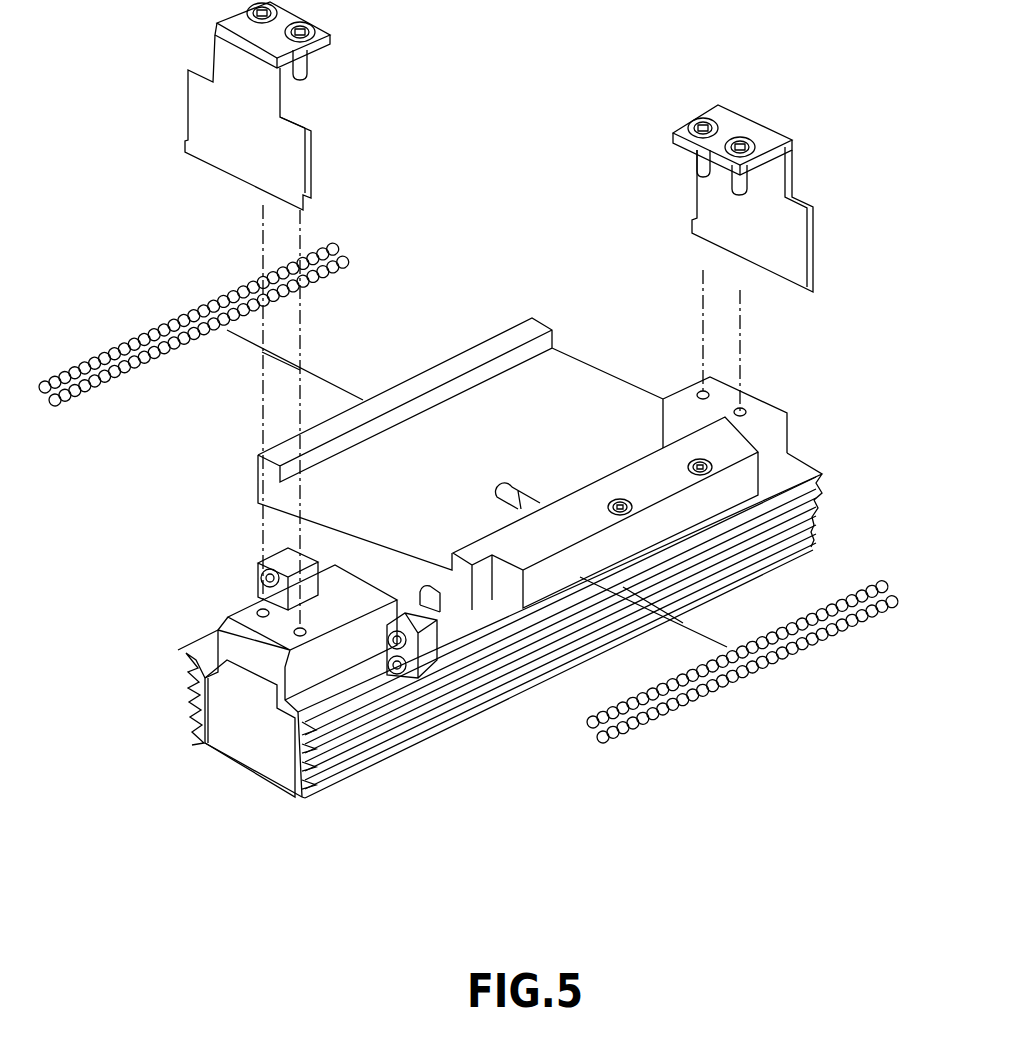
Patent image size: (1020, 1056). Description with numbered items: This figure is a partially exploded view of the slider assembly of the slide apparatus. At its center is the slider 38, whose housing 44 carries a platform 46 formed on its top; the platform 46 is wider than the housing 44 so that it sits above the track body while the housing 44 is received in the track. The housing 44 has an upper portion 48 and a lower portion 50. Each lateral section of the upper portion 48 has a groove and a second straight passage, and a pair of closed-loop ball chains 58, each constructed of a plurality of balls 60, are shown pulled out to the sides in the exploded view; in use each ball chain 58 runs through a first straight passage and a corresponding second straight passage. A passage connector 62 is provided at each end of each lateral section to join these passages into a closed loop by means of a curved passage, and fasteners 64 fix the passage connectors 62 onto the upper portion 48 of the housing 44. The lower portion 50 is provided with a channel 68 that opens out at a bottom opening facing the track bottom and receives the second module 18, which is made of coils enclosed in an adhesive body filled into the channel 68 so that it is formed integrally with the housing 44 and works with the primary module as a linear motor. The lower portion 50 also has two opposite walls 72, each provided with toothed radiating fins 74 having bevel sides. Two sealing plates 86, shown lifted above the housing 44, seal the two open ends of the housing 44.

The second module 18 is at (452, 722).
The slider 38 is at (452, 667).
The housing 44 is at (203, 655).
The platform 46 is at (553, 397).
The upper portion 48 is at (242, 565).
The lower portion 50 is at (195, 718).
The closed-loop ball chain 58 is at (107, 417).
The balls 60 is at (470, 502).
The passage connector 62 is at (536, 659).
The fasteners 64 is at (393, 673).
The channel 68 is at (205, 697).
The walls 72 is at (290, 792).
The radiating fins 74 is at (527, 660).
The sealing plates 86 is at (212, 117).